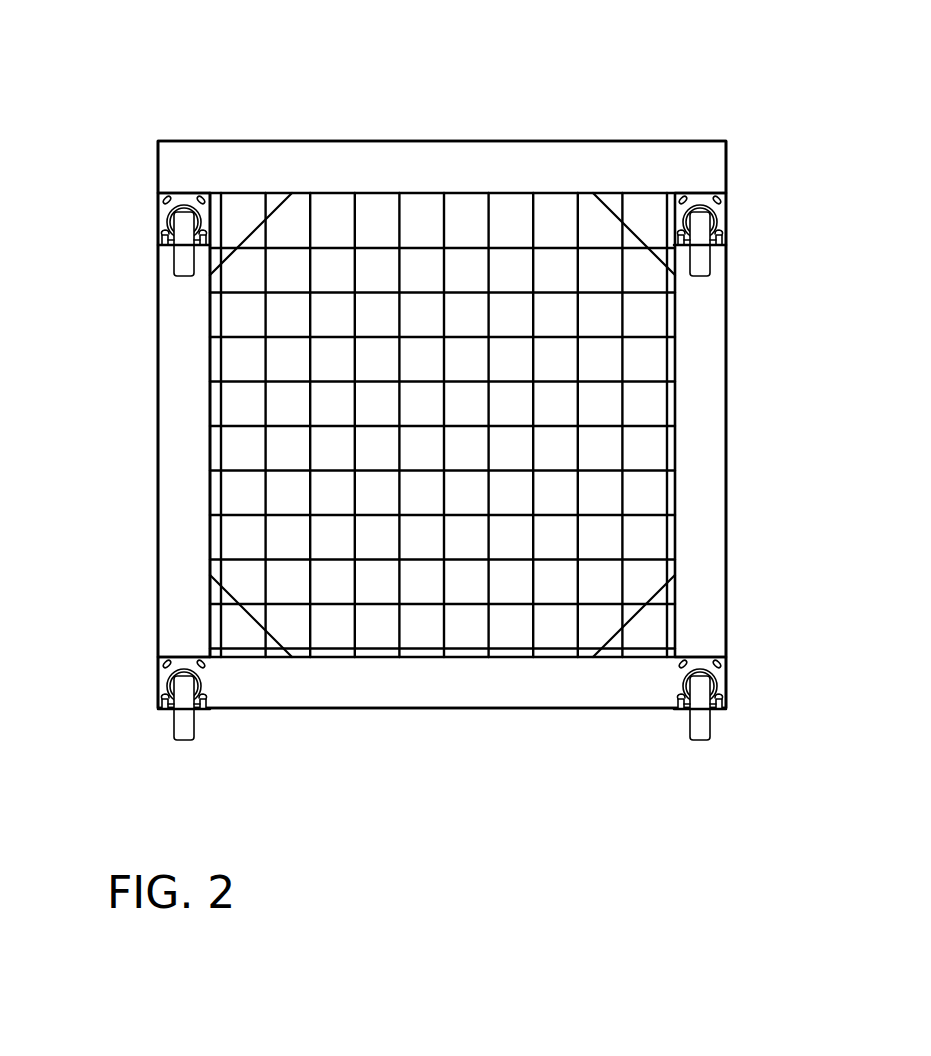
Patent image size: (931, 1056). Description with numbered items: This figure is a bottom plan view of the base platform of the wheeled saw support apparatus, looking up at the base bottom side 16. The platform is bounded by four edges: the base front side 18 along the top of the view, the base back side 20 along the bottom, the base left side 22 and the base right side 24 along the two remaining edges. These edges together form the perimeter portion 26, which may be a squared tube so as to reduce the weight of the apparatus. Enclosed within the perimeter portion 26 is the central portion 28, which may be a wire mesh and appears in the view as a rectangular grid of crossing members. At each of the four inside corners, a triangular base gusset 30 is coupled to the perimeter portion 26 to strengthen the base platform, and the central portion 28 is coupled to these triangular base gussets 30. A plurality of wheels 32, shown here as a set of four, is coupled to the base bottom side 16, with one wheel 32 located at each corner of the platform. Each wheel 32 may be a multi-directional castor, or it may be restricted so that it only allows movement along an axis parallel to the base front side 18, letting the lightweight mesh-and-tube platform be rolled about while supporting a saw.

The base bottom side 16 is at (713, 410).
The base front side 18 is at (481, 146).
The base back side 20 is at (490, 708).
The base left side 22 is at (727, 548).
The base right side 24 is at (158, 551).
The perimeter portion 26 is at (182, 458).
The central portion 28 is at (361, 590).
The triangular base gussets 30 is at (643, 637).
The wheels 32 is at (185, 730).